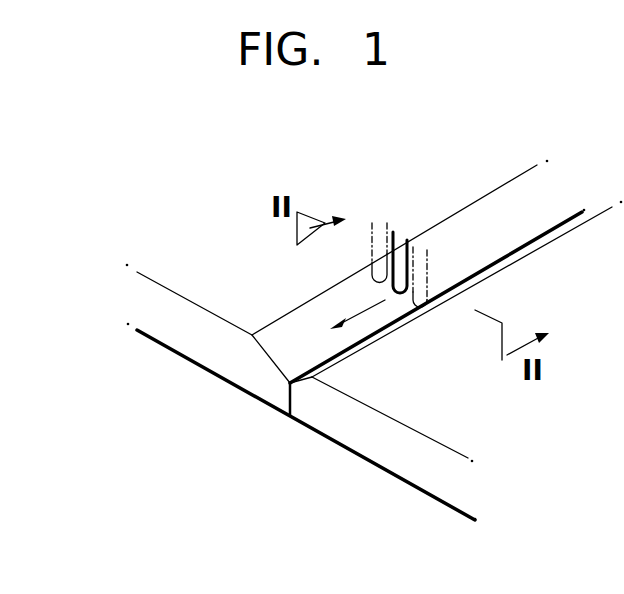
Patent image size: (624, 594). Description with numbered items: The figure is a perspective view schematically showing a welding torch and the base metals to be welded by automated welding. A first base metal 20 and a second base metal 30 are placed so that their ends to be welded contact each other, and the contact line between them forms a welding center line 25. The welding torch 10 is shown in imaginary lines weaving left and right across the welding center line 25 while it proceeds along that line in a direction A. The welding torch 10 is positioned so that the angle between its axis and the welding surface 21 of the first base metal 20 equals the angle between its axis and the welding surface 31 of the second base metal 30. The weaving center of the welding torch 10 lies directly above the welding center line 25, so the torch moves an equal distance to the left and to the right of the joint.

The welding torch 10 is at (423, 255).
The first base metal 20 is at (205, 352).
The welding surface of the first base metal 21 is at (288, 335).
The welding center line 25 is at (312, 380).
The second base metal 30 is at (420, 463).
The welding surface of the second base metal 31 is at (350, 356).
The direction A is at (367, 312).